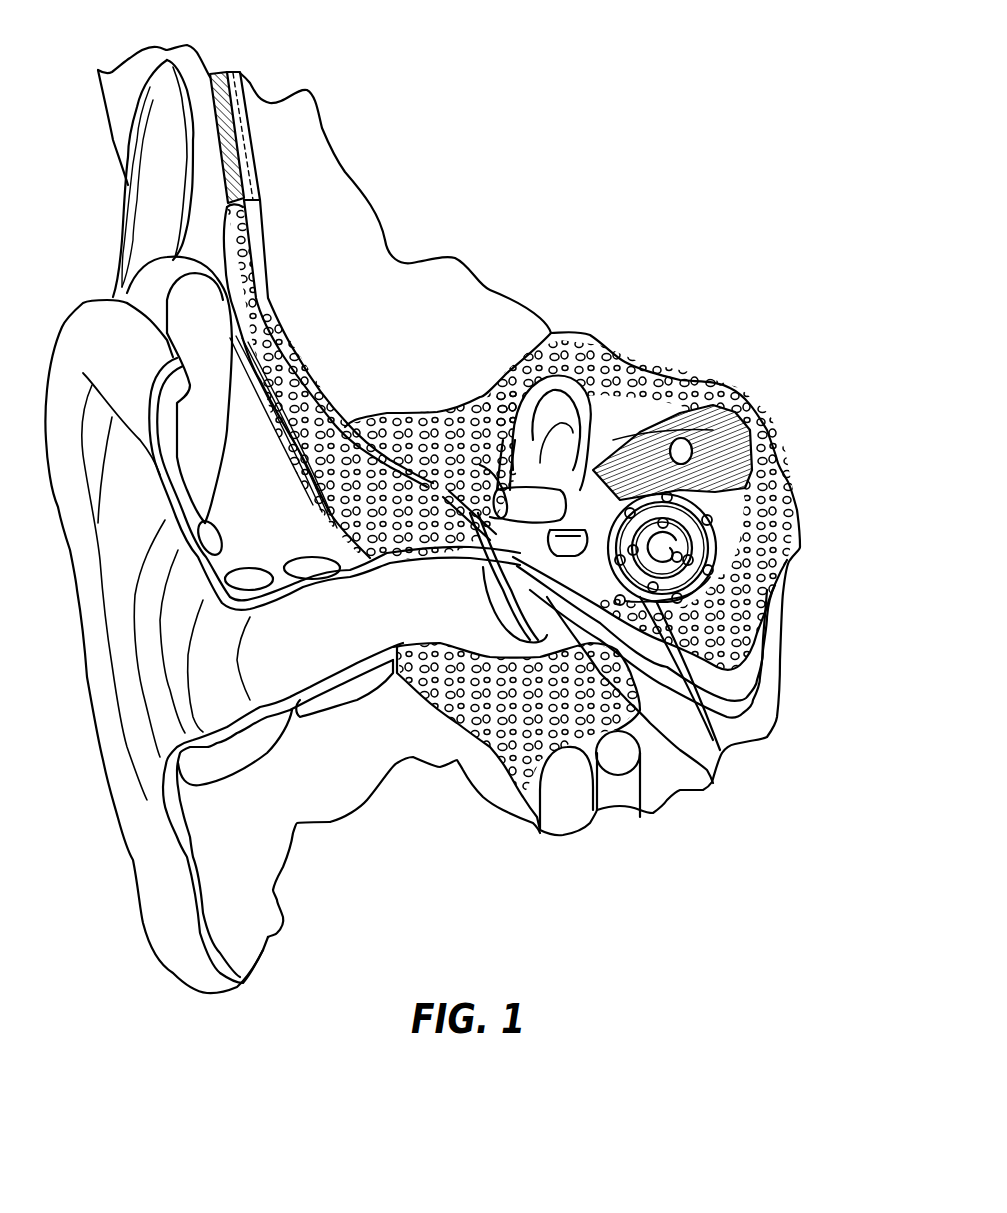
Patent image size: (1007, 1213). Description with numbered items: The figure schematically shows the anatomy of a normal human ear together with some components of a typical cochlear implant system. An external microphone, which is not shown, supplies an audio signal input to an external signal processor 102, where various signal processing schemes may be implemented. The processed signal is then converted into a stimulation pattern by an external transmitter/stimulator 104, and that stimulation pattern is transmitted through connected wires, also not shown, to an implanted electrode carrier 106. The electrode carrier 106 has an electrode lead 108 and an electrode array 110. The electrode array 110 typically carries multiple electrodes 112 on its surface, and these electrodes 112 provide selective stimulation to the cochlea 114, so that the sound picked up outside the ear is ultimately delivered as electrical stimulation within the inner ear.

The external signal processor 102 is at (150, 293).
The external transmitter/stimulator 104 is at (153, 207).
The implanted electrode carrier 106 is at (230, 130).
The electrode lead 108 is at (358, 437).
The electrode array 110 is at (720, 755).
The electrodes 112 is at (710, 568).
The cochlea 114 is at (660, 550).